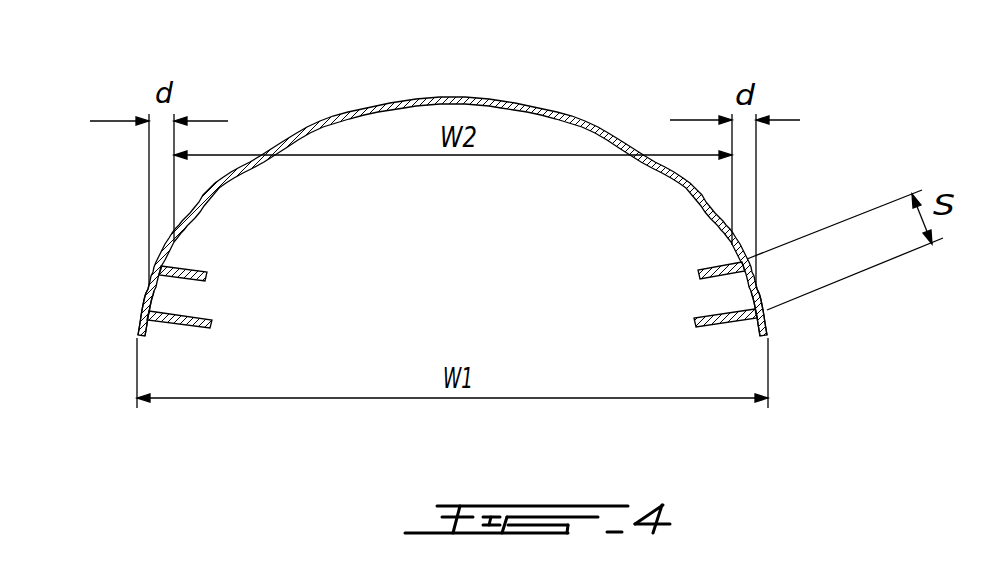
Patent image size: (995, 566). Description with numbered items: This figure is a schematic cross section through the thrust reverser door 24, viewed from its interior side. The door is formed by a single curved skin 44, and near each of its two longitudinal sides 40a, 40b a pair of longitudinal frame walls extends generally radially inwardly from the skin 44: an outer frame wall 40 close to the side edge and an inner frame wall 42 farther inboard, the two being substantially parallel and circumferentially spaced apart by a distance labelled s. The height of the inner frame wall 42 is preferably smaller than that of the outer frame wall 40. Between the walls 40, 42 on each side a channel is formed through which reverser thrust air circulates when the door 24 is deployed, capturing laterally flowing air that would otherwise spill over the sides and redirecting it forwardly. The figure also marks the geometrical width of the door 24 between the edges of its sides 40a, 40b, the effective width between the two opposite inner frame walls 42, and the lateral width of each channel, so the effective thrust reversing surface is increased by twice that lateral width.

The thrust reverser door 24 is at (368, 72).
The single skin 44 is at (580, 117).
The inner frame wall 42 is at (163, 268).
The outer frame wall 40 is at (172, 326).
The longitudinal side 40a is at (143, 305).
The longitudinal side 40b is at (772, 319).